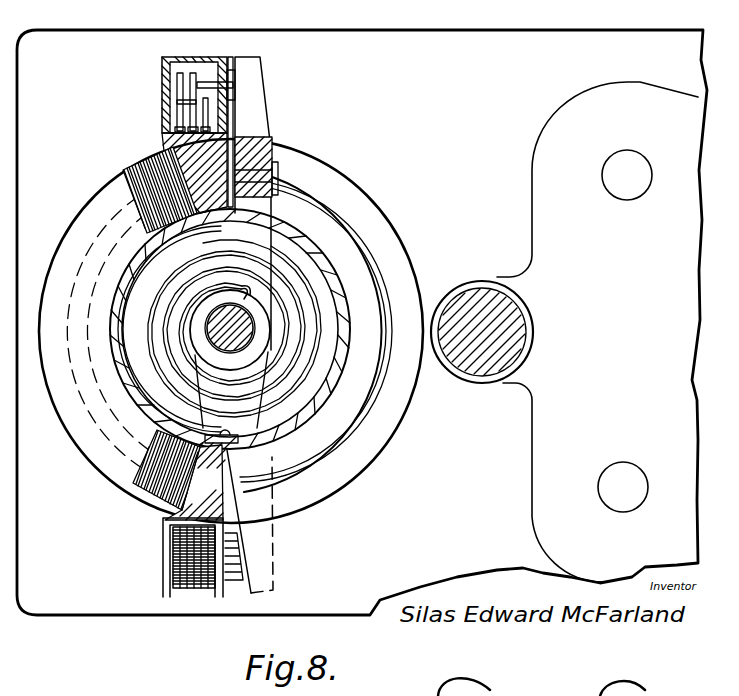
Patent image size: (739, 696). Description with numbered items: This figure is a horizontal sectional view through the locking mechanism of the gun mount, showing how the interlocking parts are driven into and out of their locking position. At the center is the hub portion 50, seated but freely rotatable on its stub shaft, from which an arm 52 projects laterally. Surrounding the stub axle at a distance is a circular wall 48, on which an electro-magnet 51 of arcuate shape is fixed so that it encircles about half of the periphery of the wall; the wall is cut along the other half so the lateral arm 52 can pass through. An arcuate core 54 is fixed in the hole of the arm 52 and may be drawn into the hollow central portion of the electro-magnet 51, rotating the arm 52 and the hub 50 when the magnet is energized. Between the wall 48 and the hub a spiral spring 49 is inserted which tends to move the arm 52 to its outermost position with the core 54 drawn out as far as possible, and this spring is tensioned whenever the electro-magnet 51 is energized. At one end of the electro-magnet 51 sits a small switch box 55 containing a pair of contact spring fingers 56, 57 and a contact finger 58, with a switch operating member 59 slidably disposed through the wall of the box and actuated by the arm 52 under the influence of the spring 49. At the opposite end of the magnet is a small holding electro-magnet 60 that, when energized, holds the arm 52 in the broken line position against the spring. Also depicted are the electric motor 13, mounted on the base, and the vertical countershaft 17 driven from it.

The electric motor 13 is at (532, 44).
The vertical countershaft 17 is at (477, 368).
The circular wall 48 is at (345, 289).
The spiral spring 49 is at (290, 253).
The hub portion 50 is at (323, 288).
The electro-magnet 51 is at (88, 211).
The arm 52 is at (262, 114).
The arcuate core 54 is at (258, 173).
The switch box 55 is at (160, 85).
The contact spring finger 56 is at (180, 73).
The contact spring finger 57 is at (201, 82).
The contact finger 58 is at (213, 107).
The switch operating member 59 is at (203, 80).
The holding electro-magnet 60 is at (173, 560).